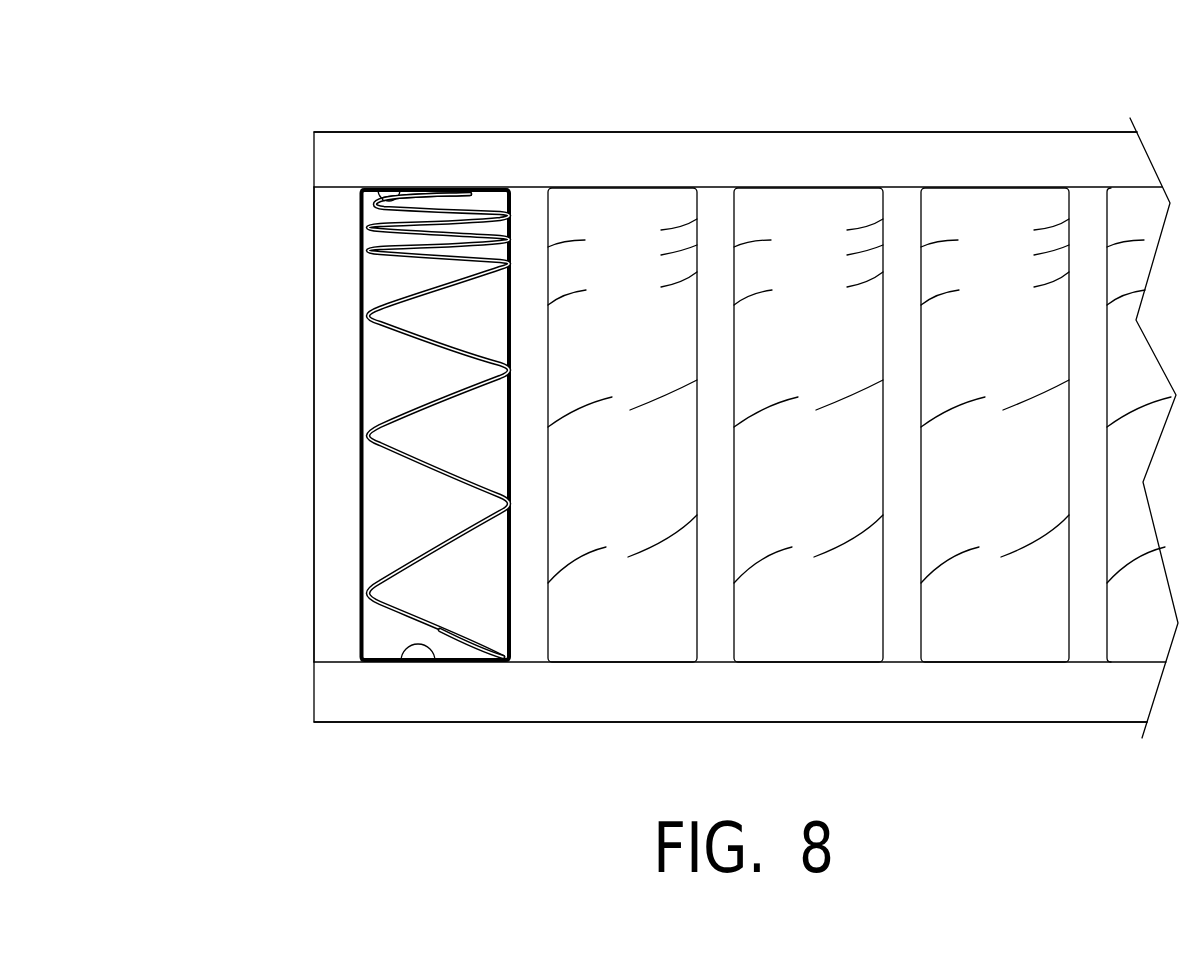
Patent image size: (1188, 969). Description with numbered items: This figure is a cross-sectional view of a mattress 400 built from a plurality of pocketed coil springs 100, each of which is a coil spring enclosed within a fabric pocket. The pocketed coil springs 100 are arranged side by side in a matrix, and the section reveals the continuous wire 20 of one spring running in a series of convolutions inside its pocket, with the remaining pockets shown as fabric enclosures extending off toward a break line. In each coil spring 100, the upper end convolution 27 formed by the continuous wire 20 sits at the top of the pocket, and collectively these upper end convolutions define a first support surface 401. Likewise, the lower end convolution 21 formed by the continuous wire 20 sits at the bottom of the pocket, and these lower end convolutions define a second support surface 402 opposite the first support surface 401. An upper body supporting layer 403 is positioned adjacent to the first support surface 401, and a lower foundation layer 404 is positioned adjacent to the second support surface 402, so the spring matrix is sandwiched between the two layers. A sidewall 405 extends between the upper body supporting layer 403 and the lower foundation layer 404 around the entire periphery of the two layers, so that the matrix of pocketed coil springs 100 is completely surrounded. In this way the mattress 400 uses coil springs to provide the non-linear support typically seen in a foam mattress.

The mattress 400 is at (240, 88).
The first support surface 401 is at (378, 188).
The second support surface 402 is at (400, 662).
The upper body supporting layer 403 is at (666, 162).
The lower foundation layer 404 is at (645, 690).
The sidewall 405 is at (337, 432).
The pocketed coil spring 100 is at (361, 212).
The continuous wire 20 is at (363, 312).
The lower end convolution 21 is at (510, 660).
The upper end convolution 27 is at (474, 188).